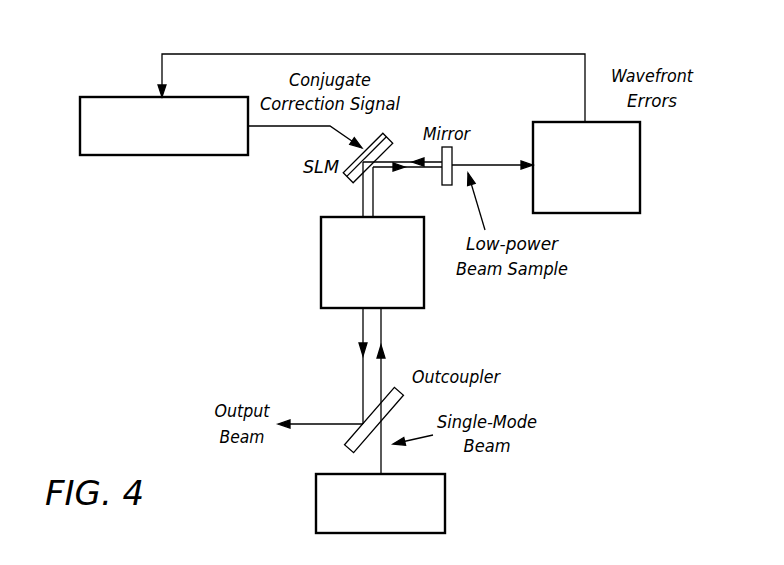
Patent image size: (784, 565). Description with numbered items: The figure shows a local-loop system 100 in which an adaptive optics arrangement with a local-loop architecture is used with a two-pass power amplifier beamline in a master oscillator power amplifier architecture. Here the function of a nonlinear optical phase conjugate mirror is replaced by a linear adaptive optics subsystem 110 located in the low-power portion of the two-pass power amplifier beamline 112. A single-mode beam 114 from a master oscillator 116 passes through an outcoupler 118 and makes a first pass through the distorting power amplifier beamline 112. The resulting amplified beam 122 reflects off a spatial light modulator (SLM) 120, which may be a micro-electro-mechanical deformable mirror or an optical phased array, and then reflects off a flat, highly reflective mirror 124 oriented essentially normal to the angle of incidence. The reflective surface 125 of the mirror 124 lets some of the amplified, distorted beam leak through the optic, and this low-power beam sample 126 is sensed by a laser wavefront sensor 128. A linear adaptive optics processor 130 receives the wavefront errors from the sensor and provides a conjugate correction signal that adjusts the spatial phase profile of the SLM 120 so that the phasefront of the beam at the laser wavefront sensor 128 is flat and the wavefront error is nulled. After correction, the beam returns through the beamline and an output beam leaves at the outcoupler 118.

The local-loop system 100 is at (166, 303).
The linear adaptive optics subsystem 110 is at (100, 187).
The two-pass power amplifier beamline 112 is at (321, 262).
The single-mode beam 114 is at (382, 467).
The master oscillator 116 is at (316, 500).
The outcoupler 118 is at (349, 443).
The spatial light modulator (SLM) 120 is at (360, 176).
The amplified beam 122 is at (373, 190).
The mirror 124 is at (462, 152).
The reflective surface 125 is at (430, 160).
The low-power beam sample 126 is at (489, 165).
The laser wavefront sensor 128 is at (640, 167).
The linear adaptive optics processor 130 is at (105, 97).